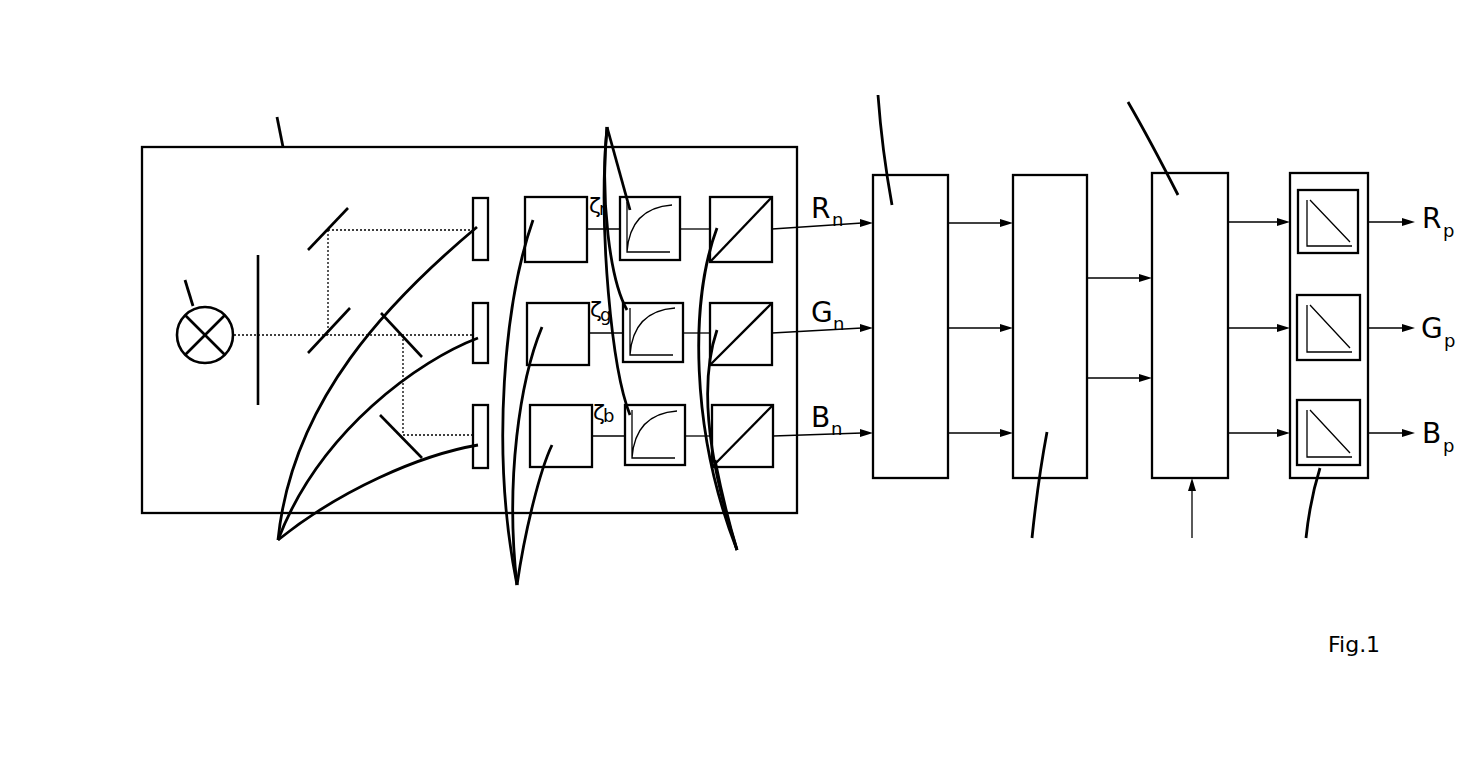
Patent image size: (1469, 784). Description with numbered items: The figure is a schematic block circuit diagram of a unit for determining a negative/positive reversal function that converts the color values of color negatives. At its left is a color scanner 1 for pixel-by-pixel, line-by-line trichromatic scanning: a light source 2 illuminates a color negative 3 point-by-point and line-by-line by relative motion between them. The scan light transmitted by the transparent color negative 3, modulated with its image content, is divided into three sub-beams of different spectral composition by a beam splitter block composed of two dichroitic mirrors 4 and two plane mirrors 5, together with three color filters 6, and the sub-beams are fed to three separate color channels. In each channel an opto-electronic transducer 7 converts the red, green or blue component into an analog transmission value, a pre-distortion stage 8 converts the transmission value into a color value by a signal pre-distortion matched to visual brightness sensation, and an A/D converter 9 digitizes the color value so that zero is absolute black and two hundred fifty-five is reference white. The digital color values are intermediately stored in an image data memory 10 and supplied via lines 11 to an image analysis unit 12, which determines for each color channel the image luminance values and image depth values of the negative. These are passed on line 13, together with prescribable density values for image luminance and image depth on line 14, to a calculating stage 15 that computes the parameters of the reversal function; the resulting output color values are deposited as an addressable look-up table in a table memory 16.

The color scanner 1 is at (437, 145).
The light source 2 is at (204, 364).
The color negative 3 is at (252, 380).
The dichroitic mirror 4 is at (323, 350).
The plane mirror 5 is at (321, 232).
The color filter 6 is at (470, 226).
The opto-electronic transducer 7 is at (522, 249).
The pre-distortion stage 8 is at (684, 226).
The A/D converter 9 is at (765, 196).
The image data memory 10 is at (897, 175).
The line 11 is at (968, 220).
The image analysis unit 12 is at (1038, 175).
The line 13 is at (1104, 277).
The line 14 is at (1198, 525).
The calculating stage 15 is at (1177, 170).
The table memory 16 is at (1305, 170).